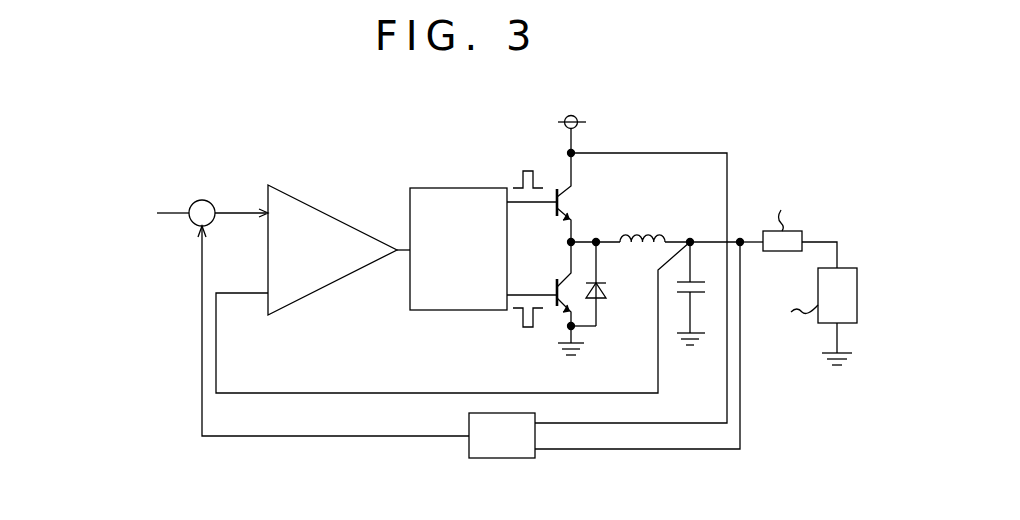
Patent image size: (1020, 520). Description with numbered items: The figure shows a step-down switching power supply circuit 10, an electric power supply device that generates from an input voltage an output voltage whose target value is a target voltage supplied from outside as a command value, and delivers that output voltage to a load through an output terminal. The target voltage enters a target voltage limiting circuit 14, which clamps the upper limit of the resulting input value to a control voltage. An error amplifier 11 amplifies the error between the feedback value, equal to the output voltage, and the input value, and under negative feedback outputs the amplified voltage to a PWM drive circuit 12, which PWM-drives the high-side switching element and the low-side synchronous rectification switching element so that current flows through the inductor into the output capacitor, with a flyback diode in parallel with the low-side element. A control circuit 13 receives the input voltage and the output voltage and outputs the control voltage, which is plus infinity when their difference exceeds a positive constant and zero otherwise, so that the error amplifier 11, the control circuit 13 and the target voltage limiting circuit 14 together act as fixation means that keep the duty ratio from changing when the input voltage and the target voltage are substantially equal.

The step-down switching power supply circuit 10 is at (322, 110).
The error amplifier 11 is at (308, 201).
The PWM drive circuit 12 is at (456, 188).
The control circuit 13 is at (469, 448).
The target voltage limiting circuit 14 is at (202, 200).